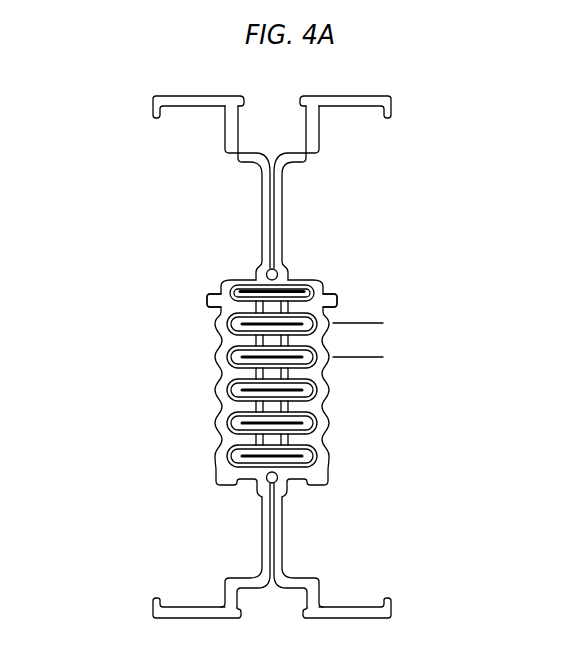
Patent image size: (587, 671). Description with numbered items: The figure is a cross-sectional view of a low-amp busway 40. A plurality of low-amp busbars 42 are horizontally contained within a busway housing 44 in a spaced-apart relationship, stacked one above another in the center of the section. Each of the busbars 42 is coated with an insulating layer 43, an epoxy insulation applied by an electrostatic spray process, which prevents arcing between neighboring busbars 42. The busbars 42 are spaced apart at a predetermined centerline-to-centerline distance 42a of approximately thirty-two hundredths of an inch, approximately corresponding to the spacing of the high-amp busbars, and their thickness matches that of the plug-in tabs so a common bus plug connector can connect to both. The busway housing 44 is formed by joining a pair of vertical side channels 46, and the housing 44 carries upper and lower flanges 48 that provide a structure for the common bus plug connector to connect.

The low-amp busway 40 is at (423, 71).
The low-amp busbars 42 is at (243, 388).
The centerline-to-centerline distance 42a is at (374, 330).
The insulating layer 43 is at (266, 402).
The busway housing 44 is at (120, 67).
The vertical side channels 46 is at (228, 282).
The upper and lower flanges 48 is at (347, 100).